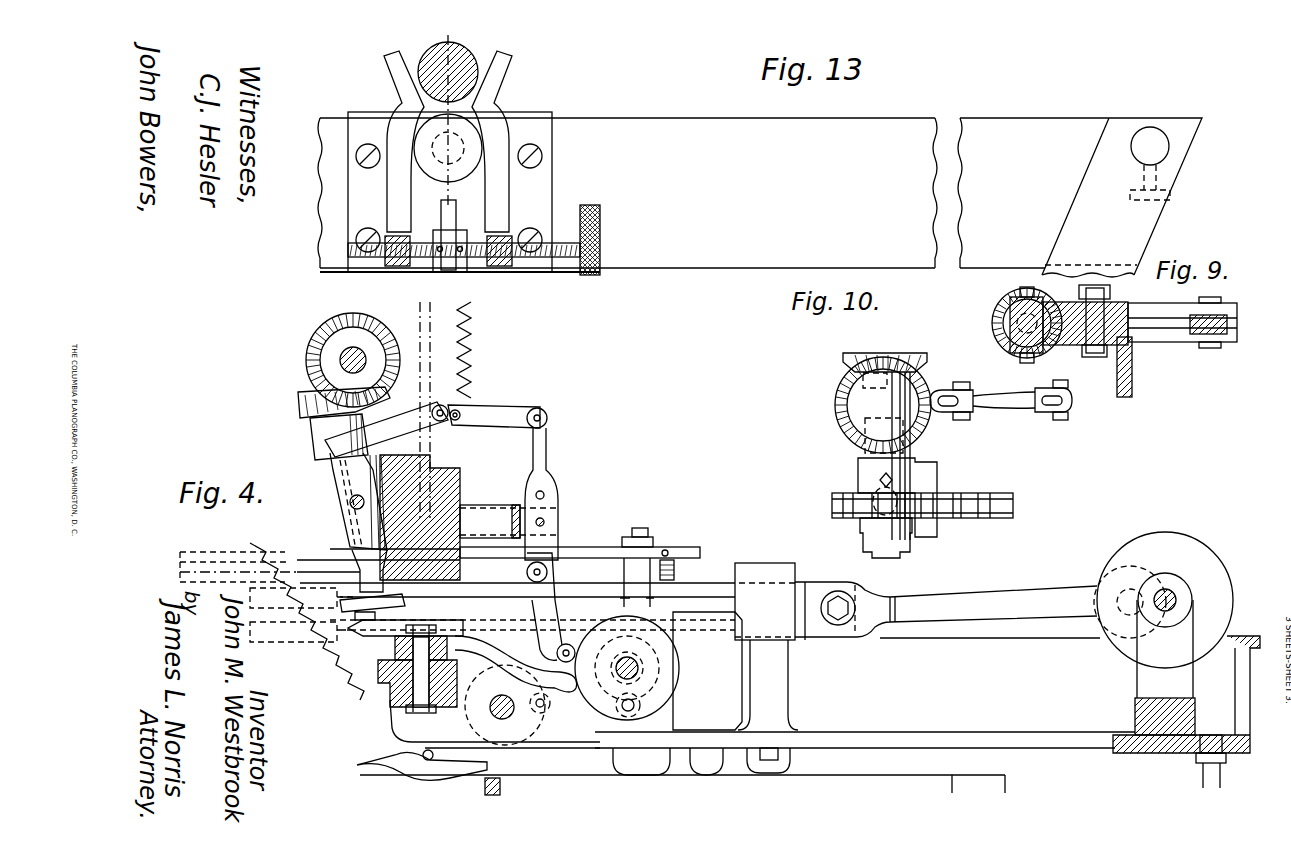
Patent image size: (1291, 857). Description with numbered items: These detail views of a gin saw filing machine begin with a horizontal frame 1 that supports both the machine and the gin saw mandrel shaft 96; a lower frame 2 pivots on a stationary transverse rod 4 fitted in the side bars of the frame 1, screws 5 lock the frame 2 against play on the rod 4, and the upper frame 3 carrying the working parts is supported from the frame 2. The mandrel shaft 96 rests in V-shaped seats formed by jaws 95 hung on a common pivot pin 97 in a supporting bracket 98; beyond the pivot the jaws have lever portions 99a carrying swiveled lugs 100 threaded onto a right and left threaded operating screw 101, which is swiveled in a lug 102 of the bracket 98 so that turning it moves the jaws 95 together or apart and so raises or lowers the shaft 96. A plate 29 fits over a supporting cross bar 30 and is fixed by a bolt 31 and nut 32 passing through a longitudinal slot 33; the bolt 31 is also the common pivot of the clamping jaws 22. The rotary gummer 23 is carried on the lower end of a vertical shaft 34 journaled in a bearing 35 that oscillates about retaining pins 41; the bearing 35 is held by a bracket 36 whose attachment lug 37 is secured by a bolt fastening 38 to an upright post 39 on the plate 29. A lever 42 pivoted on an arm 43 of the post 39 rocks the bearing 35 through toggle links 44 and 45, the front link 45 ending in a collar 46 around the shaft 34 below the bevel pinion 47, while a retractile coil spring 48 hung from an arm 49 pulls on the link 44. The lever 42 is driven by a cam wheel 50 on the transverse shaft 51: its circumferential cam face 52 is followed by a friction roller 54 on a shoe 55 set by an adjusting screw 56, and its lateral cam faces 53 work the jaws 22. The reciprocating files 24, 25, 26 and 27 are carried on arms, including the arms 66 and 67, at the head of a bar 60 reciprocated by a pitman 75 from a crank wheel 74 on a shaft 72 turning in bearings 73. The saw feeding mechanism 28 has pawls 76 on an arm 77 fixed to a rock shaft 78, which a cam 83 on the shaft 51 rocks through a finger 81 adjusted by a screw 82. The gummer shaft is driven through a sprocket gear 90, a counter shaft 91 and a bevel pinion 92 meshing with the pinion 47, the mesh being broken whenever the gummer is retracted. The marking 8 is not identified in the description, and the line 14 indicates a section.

In FIG. 13, the horizontal frame 1 is at (768, 258).
In FIG. 4, the lower horizontal frame 2 is at (826, 785).
In FIG. 4, the upper horizontal frame 3 is at (882, 755).
In FIG. 13, the stationary transverse rod 4 is at (1163, 152).
In FIG. 13, the screws 5 is at (1172, 193).
In FIG. 4, the support 8 is at (665, 760).
In FIG. 13, the rod 14 is at (448, 52).
In FIG. 4, the rod 14 is at (444, 406).
In FIG. 4, the clamping jaws 22 is at (360, 645).
In FIG. 4, the rotary file or gummer 23 is at (398, 598).
In FIG. 4, the reciprocating file 24 is at (282, 608).
In FIG. 4, the reciprocating file 25 is at (336, 643).
In FIG. 4, the reciprocating file 26 is at (243, 553).
In FIG. 4, the reciprocating file 27 is at (183, 556).
In FIG. 4, the saw feeding mechanism 28 is at (415, 780).
In FIG. 4, the plate 29 is at (392, 675).
In FIG. 4, the supporting cross bar 30 is at (395, 695).
In FIG. 4, the bolt 31 is at (432, 708).
In FIG. 4, the nut 32 is at (475, 695).
In FIG. 4, the longitudinal slot 33 is at (385, 712).
In FIG. 9, the vertical shaft 34 is at (992, 315).
In FIG. 9, the bearing 35 is at (992, 330).
In FIG. 4, the bearing 35 is at (355, 466).
In FIG. 9, the bracket 36 is at (1058, 342).
In FIG. 4, the bracket 36 is at (392, 518).
In FIG. 9, the vertical attachment lug 37 is at (1108, 300).
In FIG. 9, the bolt fastening 38 is at (1124, 326).
In FIG. 4, the bolt fastening 38 is at (410, 510).
In FIG. 9, the upright post or bracket 39 is at (1134, 345).
In FIG. 4, the upright post or bracket 39 is at (448, 500).
In FIG. 9, the retaining screws or pins 41 is at (1010, 300).
In FIG. 10, the retaining screws or pins 41 is at (995, 398).
In FIG. 4, the retaining screws or pins 41 is at (350, 502).
In FIG. 9, the lever 42 is at (1234, 322).
In FIG. 10, the lever 42 is at (1074, 403).
In FIG. 4, the lever 42 is at (548, 462).
In FIG. 9, the arm 43 is at (1183, 345).
In FIG. 4, the arm 43 is at (494, 508).
In FIG. 10, the rear toggle link 44 is at (1036, 412).
In FIG. 4, the rear toggle link 44 is at (497, 408).
In FIG. 10, the front toggle link 45 is at (945, 390).
In FIG. 4, the front toggle link 45 is at (392, 423).
In FIG. 4, the collar 46 is at (335, 444).
In FIG. 10, the bevel pinion 47 is at (840, 402).
In FIG. 4, the retractile coil spring 48 is at (470, 360).
In FIG. 4, the arm 49 is at (430, 328).
In FIG. 4, the cam wheel 50 is at (660, 673).
In FIG. 4, the transverse shaft 51 is at (640, 666).
In FIG. 4, the circumferential cam face 52 is at (680, 688).
In FIG. 4, the lateral cam faces 53 is at (655, 698).
In FIG. 4, the friction roller 54 is at (560, 647).
In FIG. 4, the shoe 55 is at (565, 565).
In FIG. 4, the adjusting screw 56 is at (530, 636).
In FIG. 4, the bar 60 is at (815, 589).
In FIG. 4, the arm 66 is at (585, 547).
In FIG. 4, the arm 67 is at (693, 572).
In FIG. 4, the transverse shaft 72 is at (1178, 600).
In FIG. 4, the bearings 73 is at (1152, 685).
In FIG. 4, the crank arm or wheel 74 is at (1123, 568).
In FIG. 4, the pitman 75 is at (996, 596).
In FIG. 4, the pawls 76 is at (400, 773).
In FIG. 4, the arm 77 is at (473, 753).
In FIG. 4, the rock shaft 78 is at (514, 712).
In FIG. 4, the pivotal finger 81 is at (565, 728).
In FIG. 4, the screw 82 is at (585, 732).
In FIG. 4, the cam 83 is at (616, 715).
In FIG. 10, the sprocket gear 90 is at (968, 518).
In FIG. 10, the counter shaft 91 is at (862, 420).
In FIG. 10, the bevel pinion 92 is at (888, 357).
In FIG. 13, the jaws 95 is at (401, 82).
In FIG. 13, the cylinder or mandrel shaft 96 is at (469, 57).
In FIG. 13, the pivot pin 97 is at (462, 145).
In FIG. 13, the supporting bracket 98 is at (558, 178).
In FIG. 13, the lever portions 99a is at (392, 200).
In FIG. 13, the swiveled lugs 100 is at (400, 262).
In FIG. 13, the right and left threaded operating screw 101 is at (588, 262).
In FIG. 13, the lug 102 is at (457, 216).